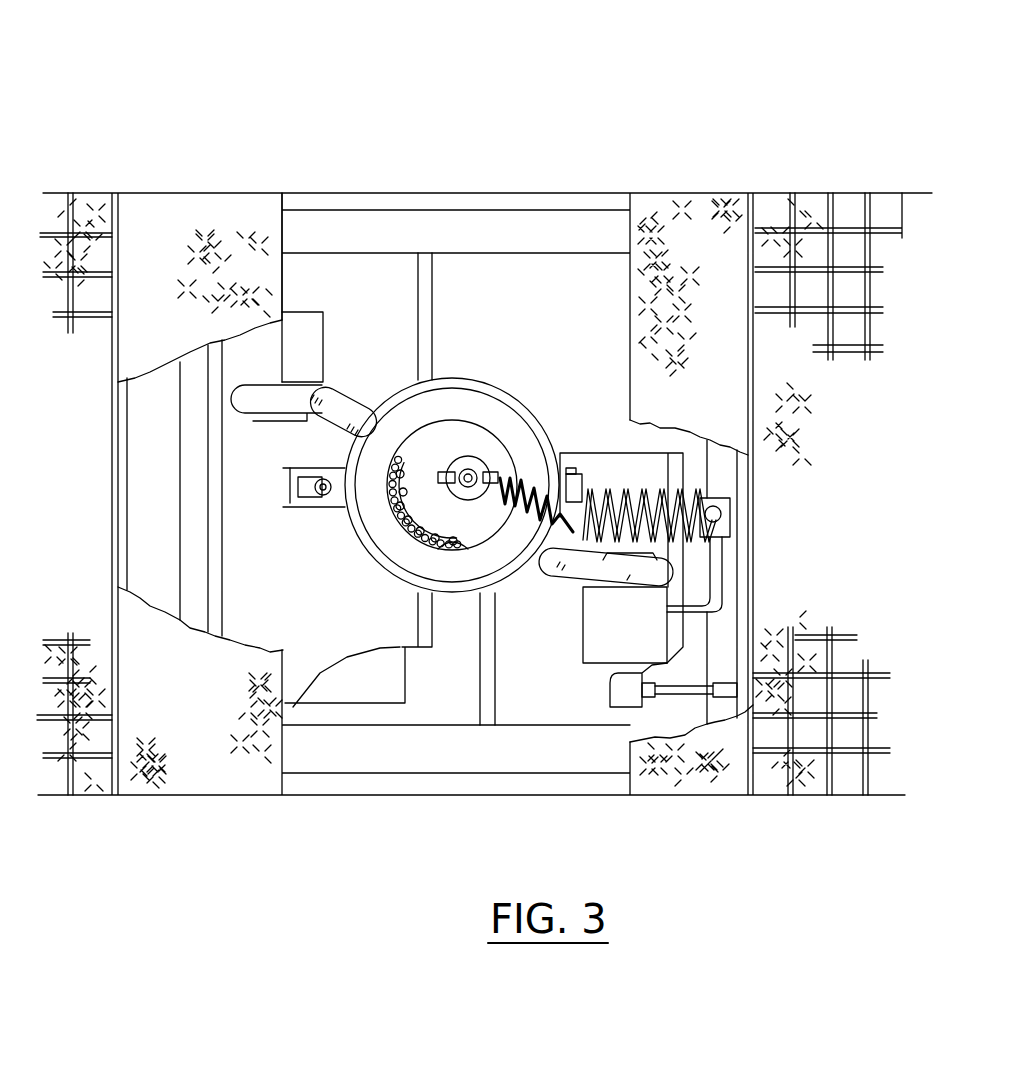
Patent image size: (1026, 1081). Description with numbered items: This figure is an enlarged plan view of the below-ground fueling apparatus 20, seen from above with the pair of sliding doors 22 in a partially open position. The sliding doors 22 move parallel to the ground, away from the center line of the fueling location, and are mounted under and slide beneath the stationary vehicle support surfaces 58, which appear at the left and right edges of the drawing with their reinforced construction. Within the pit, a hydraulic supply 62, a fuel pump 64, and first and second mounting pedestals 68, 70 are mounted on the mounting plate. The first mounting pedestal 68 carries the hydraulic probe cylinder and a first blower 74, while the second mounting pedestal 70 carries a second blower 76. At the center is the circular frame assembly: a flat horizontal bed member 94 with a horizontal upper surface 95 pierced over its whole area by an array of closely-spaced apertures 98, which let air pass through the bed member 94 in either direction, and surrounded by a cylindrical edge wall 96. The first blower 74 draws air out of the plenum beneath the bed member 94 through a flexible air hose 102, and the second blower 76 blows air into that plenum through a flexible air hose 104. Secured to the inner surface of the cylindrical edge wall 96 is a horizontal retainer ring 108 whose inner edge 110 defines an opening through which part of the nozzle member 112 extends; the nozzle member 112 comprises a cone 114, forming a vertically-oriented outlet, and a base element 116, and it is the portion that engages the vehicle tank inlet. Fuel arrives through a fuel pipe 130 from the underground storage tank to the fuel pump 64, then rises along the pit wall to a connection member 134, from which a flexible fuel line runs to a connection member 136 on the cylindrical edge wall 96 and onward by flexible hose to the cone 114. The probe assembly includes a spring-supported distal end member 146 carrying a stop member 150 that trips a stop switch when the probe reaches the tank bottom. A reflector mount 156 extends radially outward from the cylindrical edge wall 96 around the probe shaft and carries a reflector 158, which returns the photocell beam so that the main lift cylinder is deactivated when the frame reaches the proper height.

The below-ground fueling apparatus 20 is at (190, 853).
The sliding doors 22 is at (173, 753).
The vehicle support surfaces 58 is at (770, 228).
The hydraulic supply 62 is at (363, 685).
The fuel pump 64 is at (627, 687).
The first mounting pedestal 68 is at (298, 283).
The second mounting pedestal 70 is at (545, 677).
The first blower 74 is at (308, 333).
The second blower 76 is at (637, 632).
The bed member 94 is at (412, 535).
The horizontal upper surface 95 is at (392, 453).
The cylindrical edge wall 96 is at (393, 524).
The apertures 98 is at (400, 530).
The flexible air hose 102 is at (340, 397).
The flexible air hose 104 is at (563, 573).
The retainer ring 108 is at (372, 512).
The inner edge 110 is at (472, 560).
The nozzle member 112 is at (475, 535).
The cone 114 is at (467, 455).
The base element 116 is at (427, 450).
The fuel pipe 130 is at (675, 690).
The connection member 134 is at (722, 515).
The connection member 136 is at (589, 470).
The distal end member 146 is at (323, 495).
The stop member 150 is at (307, 503).
The reflector mount 156 is at (330, 470).
The reflector 158 is at (330, 467).